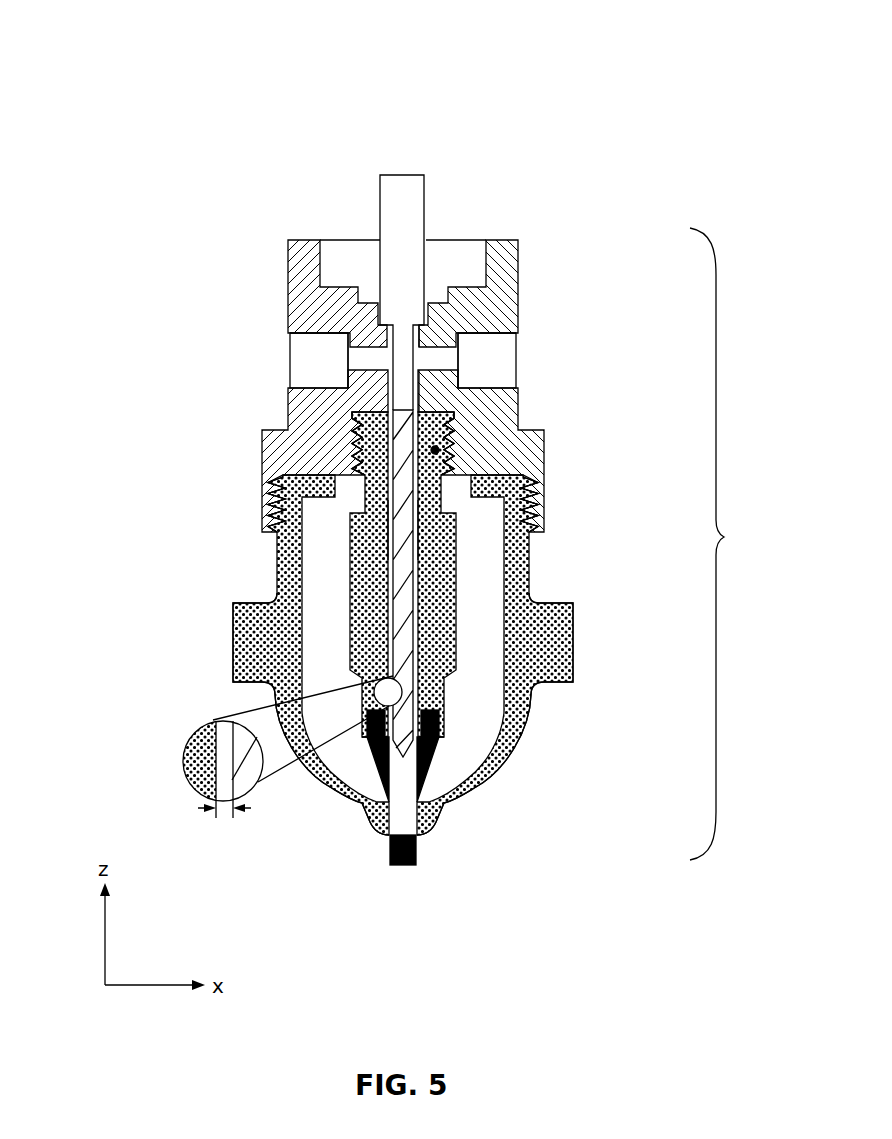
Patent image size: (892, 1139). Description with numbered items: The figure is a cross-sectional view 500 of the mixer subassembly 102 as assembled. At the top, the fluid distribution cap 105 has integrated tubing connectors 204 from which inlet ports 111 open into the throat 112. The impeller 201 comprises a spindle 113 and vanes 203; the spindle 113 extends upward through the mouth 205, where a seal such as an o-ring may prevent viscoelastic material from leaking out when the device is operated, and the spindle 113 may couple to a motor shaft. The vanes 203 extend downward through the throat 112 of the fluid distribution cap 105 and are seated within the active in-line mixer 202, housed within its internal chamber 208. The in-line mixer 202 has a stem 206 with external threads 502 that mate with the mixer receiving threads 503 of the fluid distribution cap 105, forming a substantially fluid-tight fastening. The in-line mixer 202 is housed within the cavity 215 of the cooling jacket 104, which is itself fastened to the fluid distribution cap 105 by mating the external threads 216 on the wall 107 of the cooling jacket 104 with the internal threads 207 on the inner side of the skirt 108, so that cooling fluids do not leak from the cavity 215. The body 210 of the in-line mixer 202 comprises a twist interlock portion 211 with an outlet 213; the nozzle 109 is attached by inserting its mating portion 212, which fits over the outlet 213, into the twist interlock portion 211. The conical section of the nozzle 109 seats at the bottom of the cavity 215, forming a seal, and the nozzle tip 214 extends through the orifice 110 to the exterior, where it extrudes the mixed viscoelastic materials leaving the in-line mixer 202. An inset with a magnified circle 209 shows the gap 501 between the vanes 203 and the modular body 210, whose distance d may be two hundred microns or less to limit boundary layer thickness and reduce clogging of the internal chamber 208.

The cross-sectional view 500 is at (612, 52).
The impeller 201 is at (398, 150).
The mixer subassembly 102 is at (733, 544).
The spindle 113 is at (424, 210).
The mouth 205 is at (380, 240).
The fluid distribution cap 105 is at (268, 281).
The inlet ports 111 is at (337, 354).
The tubing connectors 204 is at (290, 343).
The throat 112 is at (418, 358).
The skirt 108 is at (265, 456).
The external threads 502 is at (355, 437).
The mixer receiving threads 503 is at (452, 414).
The internal threads 207 is at (278, 484).
The external threads 216 is at (532, 500).
The stem 206 is at (437, 450).
The in-line mixer 202 is at (476, 578).
The cooling jacket 104 is at (235, 652).
The cavity 215 is at (493, 642).
The wall 107 is at (531, 723).
The orifice 110 is at (377, 827).
The body 210 is at (355, 632).
The internal chamber 208 is at (380, 527).
The vanes 203 is at (397, 600).
The mating portion 212 is at (423, 709).
The twist interlock portion 211 is at (438, 733).
The outlet 213 is at (430, 740).
The nozzle 109 is at (428, 762).
The nozzle tip 214 is at (415, 847).
The detail view 209 is at (208, 727).
The gap 501 is at (223, 733).